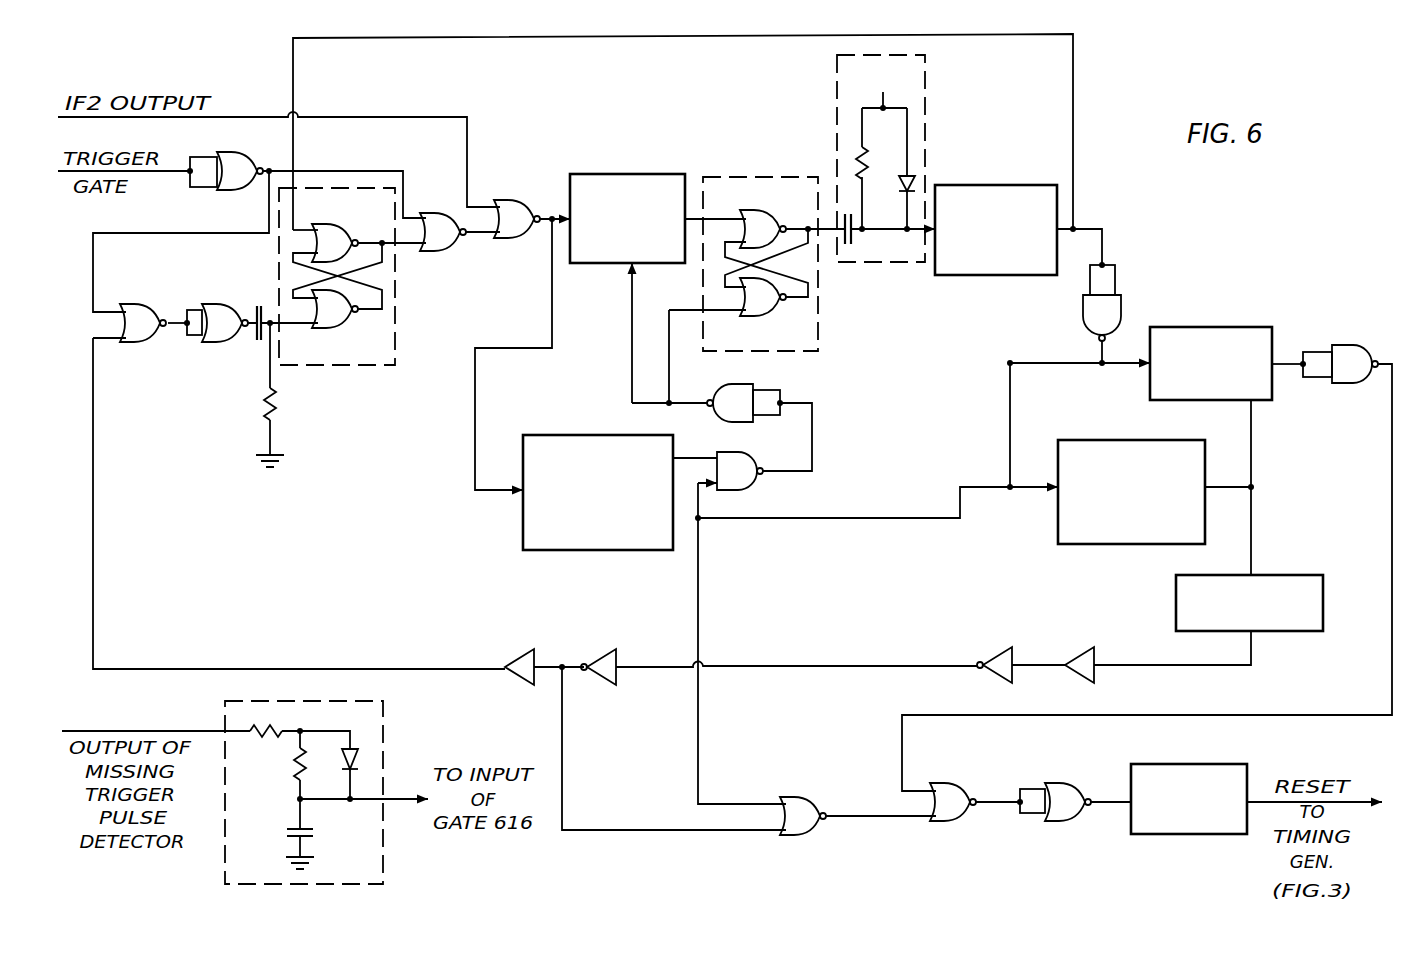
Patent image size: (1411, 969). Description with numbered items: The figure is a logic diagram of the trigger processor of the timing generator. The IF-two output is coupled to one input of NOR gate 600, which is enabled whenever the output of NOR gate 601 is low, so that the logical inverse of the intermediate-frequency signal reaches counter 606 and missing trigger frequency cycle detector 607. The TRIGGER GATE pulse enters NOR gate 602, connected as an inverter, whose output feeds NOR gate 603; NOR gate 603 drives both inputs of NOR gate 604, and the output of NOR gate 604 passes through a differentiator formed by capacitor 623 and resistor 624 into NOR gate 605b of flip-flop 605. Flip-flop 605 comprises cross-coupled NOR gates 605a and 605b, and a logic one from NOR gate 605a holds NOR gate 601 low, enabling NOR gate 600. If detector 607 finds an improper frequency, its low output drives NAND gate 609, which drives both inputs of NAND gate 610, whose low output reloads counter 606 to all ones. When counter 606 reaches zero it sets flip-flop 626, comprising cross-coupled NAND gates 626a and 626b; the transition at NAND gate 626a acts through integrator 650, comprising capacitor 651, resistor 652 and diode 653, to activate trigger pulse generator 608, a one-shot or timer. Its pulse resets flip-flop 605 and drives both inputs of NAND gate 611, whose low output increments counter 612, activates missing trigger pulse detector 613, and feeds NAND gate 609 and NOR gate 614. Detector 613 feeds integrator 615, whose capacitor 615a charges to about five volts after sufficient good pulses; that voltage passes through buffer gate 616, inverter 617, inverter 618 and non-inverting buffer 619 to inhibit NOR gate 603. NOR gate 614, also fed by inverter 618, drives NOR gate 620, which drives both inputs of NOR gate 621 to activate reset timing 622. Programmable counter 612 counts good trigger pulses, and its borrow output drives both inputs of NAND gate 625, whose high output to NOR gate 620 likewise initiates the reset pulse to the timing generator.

The NOR gate 600 is at (505, 239).
The NOR gate 601 is at (430, 253).
The NOR gate 602 is at (245, 157).
The NOR gate 603 is at (128, 303).
The NOR gate 604 is at (210, 303).
The flip-flop 605 is at (398, 345).
The NOR gate 605a is at (330, 223).
The NOR gate 605b is at (330, 329).
The counter 606 is at (603, 173).
The missing trigger frequency cycle detector 607 is at (573, 551).
The trigger pulse generator 608 is at (978, 185).
The NAND gate 609 is at (757, 489).
The NAND gate 610 is at (745, 385).
The NAND gate 611 is at (1125, 309).
The counter 612 is at (1218, 327).
The missing trigger pulse detector 613 is at (1110, 440).
The NOR gate 614 is at (792, 836).
The integrator 615 is at (1288, 574).
The capacitor 615a is at (308, 838).
The buffer gate 616 is at (1083, 648).
The inverter 617 is at (993, 648).
The inverter 618 is at (601, 650).
The non-inverting buffer 619 is at (510, 650).
The NOR gate 620 is at (948, 823).
The NOR gate 621 is at (1058, 822).
The reset timing 622 is at (1172, 836).
The capacitor 623 is at (256, 341).
The resistor 624 is at (277, 408).
The NAND gate 625 is at (1345, 345).
The flip-flop 626 is at (716, 176).
The NAND gate 626a is at (757, 210).
The NAND gate 626b is at (757, 316).
The integrator 650 is at (925, 73).
The capacitor 651 is at (848, 247).
The resistor 652 is at (860, 146).
The diode 653 is at (912, 172).